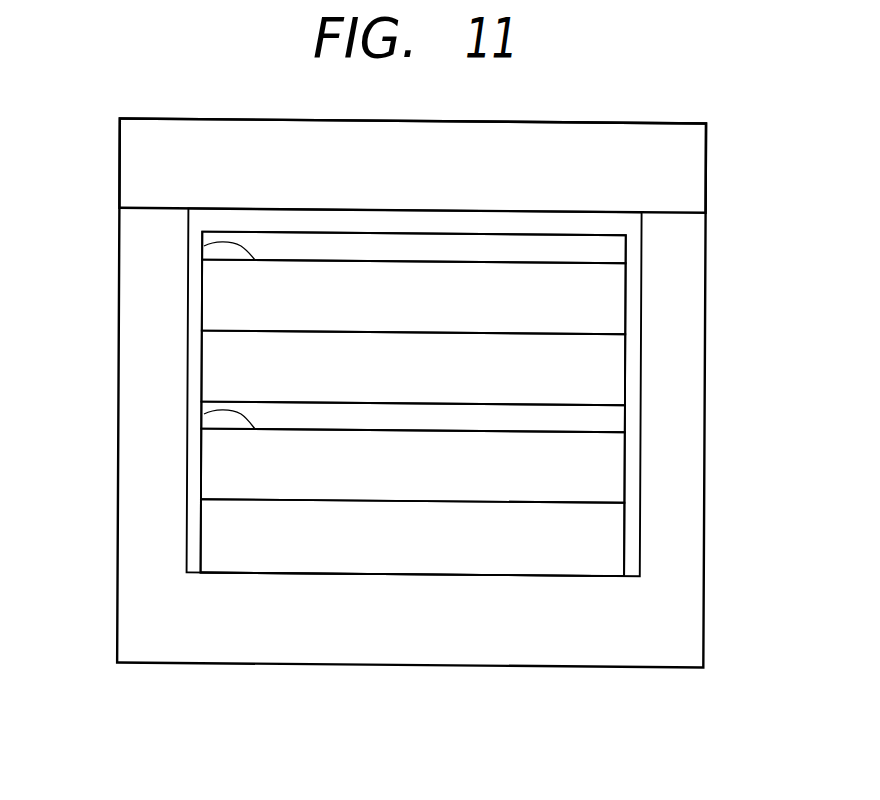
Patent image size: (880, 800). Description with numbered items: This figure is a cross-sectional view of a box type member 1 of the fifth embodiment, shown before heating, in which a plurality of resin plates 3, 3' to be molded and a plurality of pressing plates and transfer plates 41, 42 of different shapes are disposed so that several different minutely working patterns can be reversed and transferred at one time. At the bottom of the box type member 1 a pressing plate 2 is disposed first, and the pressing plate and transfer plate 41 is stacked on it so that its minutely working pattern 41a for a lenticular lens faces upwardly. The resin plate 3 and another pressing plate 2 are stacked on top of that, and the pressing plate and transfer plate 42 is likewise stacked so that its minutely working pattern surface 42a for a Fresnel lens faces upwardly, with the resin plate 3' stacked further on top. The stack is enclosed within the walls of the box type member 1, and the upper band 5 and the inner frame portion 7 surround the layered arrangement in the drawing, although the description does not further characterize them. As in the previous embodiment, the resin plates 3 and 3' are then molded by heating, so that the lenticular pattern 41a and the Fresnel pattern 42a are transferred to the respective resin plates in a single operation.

The box type member 1 is at (692, 630).
The upper layer 5 is at (695, 160).
The frame portion 7 is at (623, 226).
The resin plate 3' is at (490, 255).
The pressing plate and transfer plate 42 is at (612, 311).
The minutely working pattern surface 42a is at (204, 246).
The pressing plate 2 is at (617, 386).
The resin plate 3 is at (488, 425).
The pressing plate and transfer plate 41 is at (612, 458).
The minutely working pattern 41a is at (204, 414).